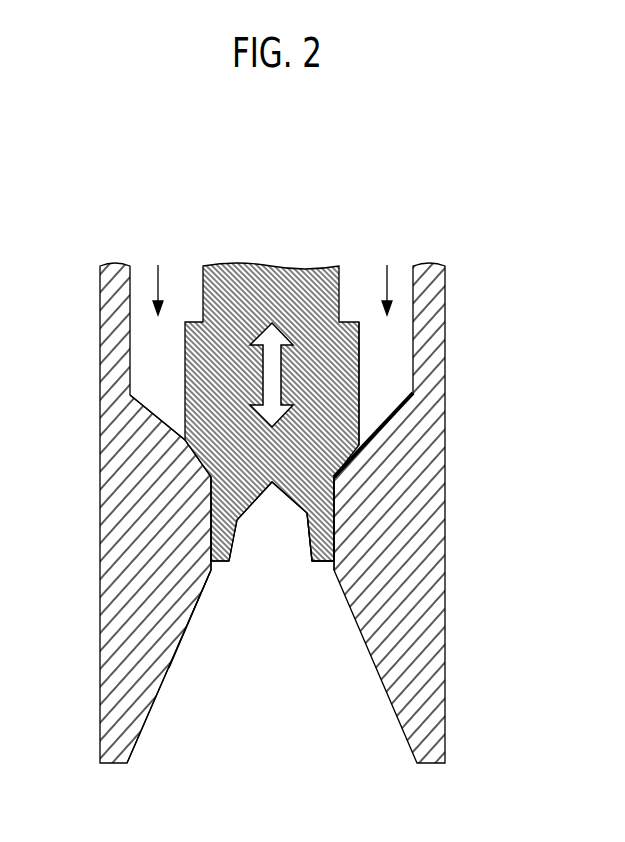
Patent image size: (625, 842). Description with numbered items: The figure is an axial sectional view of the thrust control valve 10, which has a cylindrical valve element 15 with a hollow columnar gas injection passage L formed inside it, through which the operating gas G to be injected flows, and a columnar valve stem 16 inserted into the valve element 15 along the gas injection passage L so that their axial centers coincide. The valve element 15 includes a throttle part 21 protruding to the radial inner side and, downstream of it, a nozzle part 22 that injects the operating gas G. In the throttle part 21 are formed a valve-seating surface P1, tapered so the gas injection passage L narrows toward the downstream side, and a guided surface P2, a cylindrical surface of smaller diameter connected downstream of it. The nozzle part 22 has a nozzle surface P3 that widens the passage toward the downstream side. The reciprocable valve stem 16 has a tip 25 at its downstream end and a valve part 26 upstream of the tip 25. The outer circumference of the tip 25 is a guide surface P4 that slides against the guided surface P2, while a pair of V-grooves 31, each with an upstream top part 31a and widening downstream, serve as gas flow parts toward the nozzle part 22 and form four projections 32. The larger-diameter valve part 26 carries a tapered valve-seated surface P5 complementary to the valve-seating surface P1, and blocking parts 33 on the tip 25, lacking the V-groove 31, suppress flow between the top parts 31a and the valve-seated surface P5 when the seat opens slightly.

The thrust control valve 10 is at (346, 197).
The valve element 15 is at (448, 343).
The valve stem 16 is at (200, 276).
The throttle part 21 is at (221, 577).
The nozzle part 22 is at (172, 694).
The tip 25 is at (334, 517).
The valve part 26 is at (360, 384).
The V-groove 31 is at (299, 548).
The top part 31a is at (272, 486).
The projection 32 is at (230, 565).
The blocking part 33 is at (342, 477).
The valve-seating surface P1 is at (183, 441).
The guided surface P2 is at (210, 509).
The nozzle surface P3 is at (183, 652).
The guide surface P4 is at (334, 545).
The valve-seated surface P5 is at (346, 470).
The gas injection passage L is at (150, 373).
The operating gas G is at (387, 266).